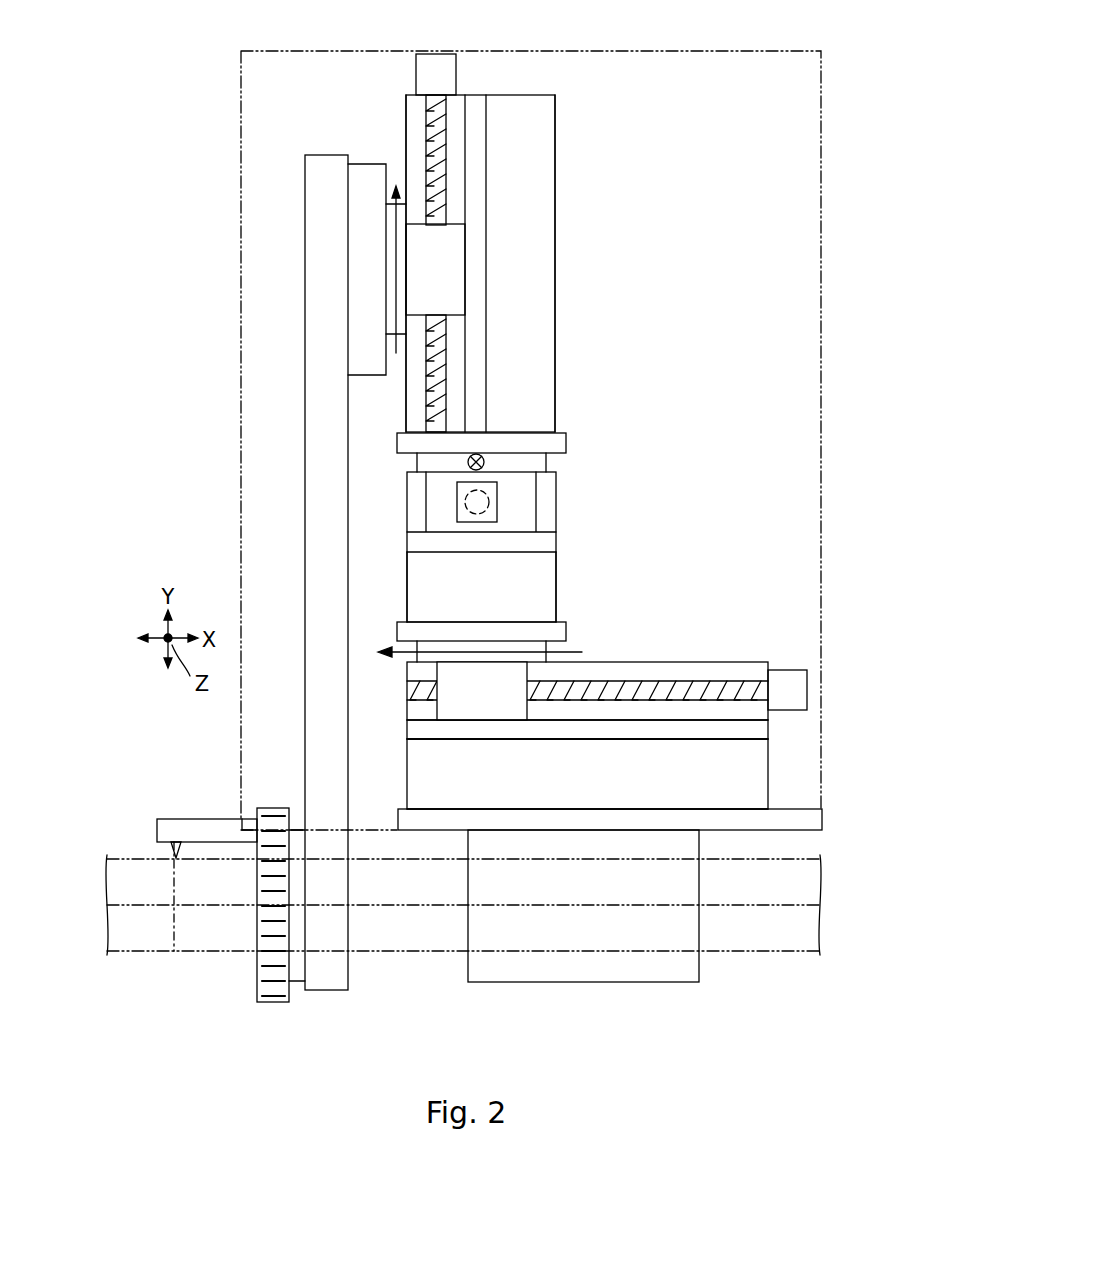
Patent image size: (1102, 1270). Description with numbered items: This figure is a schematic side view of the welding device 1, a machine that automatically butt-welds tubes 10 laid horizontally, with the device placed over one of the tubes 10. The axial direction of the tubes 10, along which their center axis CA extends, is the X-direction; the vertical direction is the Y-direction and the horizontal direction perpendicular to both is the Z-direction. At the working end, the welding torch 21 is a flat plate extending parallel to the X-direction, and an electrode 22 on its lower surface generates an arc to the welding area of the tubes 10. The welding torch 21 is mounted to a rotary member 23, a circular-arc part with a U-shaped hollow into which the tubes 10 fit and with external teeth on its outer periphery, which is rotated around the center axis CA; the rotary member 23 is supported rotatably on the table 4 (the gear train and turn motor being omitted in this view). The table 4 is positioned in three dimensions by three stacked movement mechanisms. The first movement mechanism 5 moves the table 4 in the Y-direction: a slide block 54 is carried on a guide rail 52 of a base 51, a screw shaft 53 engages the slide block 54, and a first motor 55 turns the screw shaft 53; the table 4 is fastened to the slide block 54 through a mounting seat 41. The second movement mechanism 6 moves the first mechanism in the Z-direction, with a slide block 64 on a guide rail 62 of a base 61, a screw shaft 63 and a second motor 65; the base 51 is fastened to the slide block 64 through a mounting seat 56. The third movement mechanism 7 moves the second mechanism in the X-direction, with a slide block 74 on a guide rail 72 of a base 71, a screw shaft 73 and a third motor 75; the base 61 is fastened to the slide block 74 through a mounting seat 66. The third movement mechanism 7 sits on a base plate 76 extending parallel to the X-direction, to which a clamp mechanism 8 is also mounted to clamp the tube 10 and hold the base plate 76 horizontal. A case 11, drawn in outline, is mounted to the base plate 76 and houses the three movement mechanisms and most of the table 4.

The welding device 1 is at (140, 287).
The table 4 is at (320, 422).
The first movement mechanism 5 is at (577, 185).
The second movement mechanism 6 is at (579, 518).
The third movement mechanism 7 is at (737, 648).
The clamp mechanism 8 is at (585, 942).
The tube 10 is at (135, 933).
The case 11 is at (241, 173).
The welding torch 21 is at (190, 828).
The electrode 22 is at (176, 858).
The rotary member 23 is at (273, 1002).
The mounting seat 41 is at (357, 272).
The base 51 is at (528, 130).
The guide rail 52 is at (481, 340).
The screw shaft 53 is at (428, 128).
The slide block 54 is at (445, 266).
The first motor 55 is at (428, 72).
The mounting seat 56 is at (522, 442).
The base 61 is at (540, 585).
The guide rail 62 is at (543, 542).
The screw shaft 63 is at (480, 498).
The slide block 64 is at (513, 459).
The second motor 65 is at (507, 507).
The mounting seat 66 is at (553, 632).
The base 71 is at (757, 773).
The guide rail 72 is at (757, 731).
The screw shaft 73 is at (733, 685).
The slide block 74 is at (475, 700).
The third motor 75 is at (793, 680).
The base plate 76 is at (813, 822).
The center axis CA is at (733, 905).